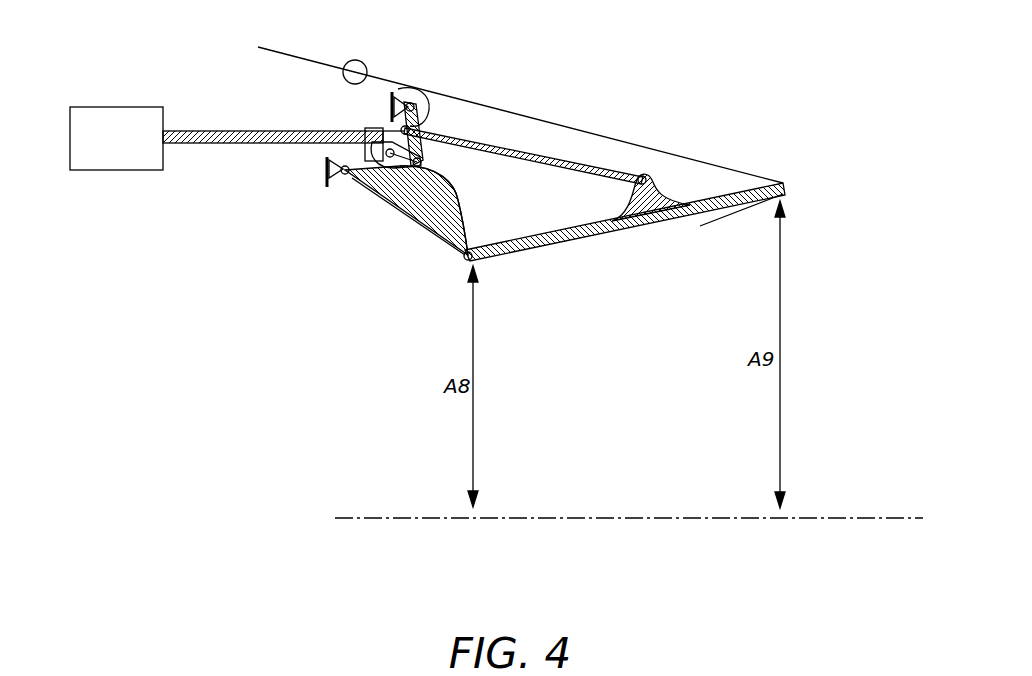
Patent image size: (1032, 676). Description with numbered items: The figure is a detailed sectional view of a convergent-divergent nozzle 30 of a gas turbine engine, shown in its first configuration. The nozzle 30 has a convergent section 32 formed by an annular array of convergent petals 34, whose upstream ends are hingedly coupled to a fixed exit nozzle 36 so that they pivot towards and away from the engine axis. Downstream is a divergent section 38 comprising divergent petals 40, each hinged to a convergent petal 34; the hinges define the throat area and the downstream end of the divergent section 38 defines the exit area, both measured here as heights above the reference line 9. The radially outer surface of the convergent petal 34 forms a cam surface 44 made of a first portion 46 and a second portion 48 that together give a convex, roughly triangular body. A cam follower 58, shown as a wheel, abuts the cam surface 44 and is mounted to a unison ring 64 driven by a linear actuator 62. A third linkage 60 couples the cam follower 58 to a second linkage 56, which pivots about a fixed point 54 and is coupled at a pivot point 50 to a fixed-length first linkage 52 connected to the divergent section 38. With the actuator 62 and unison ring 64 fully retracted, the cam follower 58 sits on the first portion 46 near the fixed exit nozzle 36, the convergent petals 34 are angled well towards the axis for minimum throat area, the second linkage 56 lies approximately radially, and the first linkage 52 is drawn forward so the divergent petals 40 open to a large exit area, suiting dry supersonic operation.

The nozzle 30 is at (165, 22).
The ground surface 9 is at (850, 517).
The convergent section 32 is at (358, 226).
The convergent petals 34 is at (421, 228).
The fixed exit nozzle 36 is at (325, 172).
The divergent section 38 is at (546, 268).
The divergent petals 40 is at (716, 208).
The cam surface 44 is at (466, 222).
The first portion 46 is at (362, 145).
The second portion 48 is at (460, 197).
The pivot point 50 is at (426, 122).
The first linkage 52 is at (645, 172).
The fixed point 54 is at (400, 90).
The second linkage 56 is at (411, 99).
The cam follower 58 is at (375, 150).
The third linkage 60 is at (393, 170).
The actuator 62 is at (120, 172).
The unison ring 64 is at (195, 145).